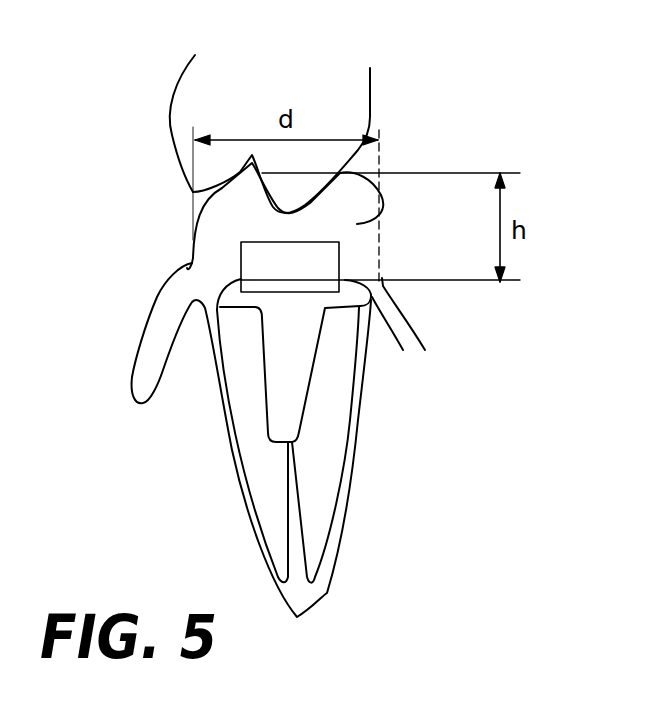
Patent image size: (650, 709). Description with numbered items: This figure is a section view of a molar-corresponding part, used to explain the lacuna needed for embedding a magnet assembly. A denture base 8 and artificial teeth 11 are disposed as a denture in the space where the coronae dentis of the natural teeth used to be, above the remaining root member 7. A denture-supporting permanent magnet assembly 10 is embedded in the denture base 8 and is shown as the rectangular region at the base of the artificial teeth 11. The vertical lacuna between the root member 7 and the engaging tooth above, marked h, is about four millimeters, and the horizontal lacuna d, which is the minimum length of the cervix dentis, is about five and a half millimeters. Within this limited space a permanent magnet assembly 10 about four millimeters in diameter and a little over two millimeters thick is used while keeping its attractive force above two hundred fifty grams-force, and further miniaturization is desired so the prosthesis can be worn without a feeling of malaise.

The root member 7 is at (302, 320).
The denture base 8 is at (405, 327).
The denture-supporting permanent magnet assembly 10 is at (266, 263).
The artificial teeth 11 is at (382, 278).